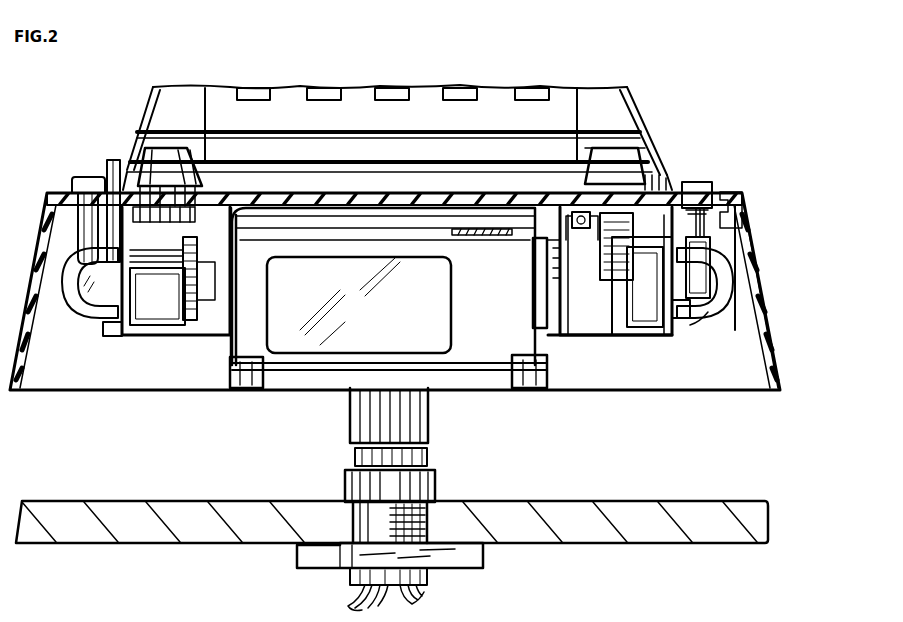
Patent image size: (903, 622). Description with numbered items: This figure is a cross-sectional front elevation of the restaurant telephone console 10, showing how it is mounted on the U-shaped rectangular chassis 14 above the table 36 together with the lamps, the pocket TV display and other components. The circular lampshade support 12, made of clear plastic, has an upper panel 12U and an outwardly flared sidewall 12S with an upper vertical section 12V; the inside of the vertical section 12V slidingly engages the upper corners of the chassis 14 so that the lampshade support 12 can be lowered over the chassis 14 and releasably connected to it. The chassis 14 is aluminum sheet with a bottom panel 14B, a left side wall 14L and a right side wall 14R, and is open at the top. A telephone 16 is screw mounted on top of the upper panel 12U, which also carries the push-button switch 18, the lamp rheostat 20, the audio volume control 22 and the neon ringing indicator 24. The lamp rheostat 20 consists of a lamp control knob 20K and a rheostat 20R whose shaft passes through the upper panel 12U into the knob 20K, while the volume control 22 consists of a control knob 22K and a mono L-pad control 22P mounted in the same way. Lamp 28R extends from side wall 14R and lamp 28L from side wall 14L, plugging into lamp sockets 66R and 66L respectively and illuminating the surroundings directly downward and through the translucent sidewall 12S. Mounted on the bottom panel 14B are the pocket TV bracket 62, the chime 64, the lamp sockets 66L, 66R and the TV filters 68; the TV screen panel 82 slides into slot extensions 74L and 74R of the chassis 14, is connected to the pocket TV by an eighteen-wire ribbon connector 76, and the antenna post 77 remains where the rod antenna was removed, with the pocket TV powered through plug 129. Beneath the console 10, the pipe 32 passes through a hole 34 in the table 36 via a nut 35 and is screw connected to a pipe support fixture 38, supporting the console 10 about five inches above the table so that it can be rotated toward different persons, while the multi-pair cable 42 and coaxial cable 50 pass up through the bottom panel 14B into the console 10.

The restaurant telephone console 10 is at (520, 66).
The circular lampshade support 12 is at (778, 392).
The outwardly flared sidewall 12S is at (772, 344).
The upper panel 12U is at (724, 192).
The upper vertical section 12V is at (768, 236).
The U-shaped rectangular chassis 14 is at (128, 336).
The left side wall 14L is at (116, 336).
The right side wall 14R is at (668, 314).
The bottom panel 14B is at (606, 335).
The telephone 16 is at (633, 100).
The push-button switch 18 is at (712, 263).
The lamp rheostat 20 is at (658, 150).
The lamp control knob 20K is at (626, 148).
The rheostat 20R is at (632, 182).
The audio volume control 22 is at (124, 166).
The control knob 22K is at (183, 160).
The mono L-pad control 22P is at (180, 222).
The neon ringing indicator 24 is at (88, 177).
The lamp 28L is at (94, 318).
The lamp 28R is at (732, 296).
The pipe 32 is at (430, 416).
The hole 34 is at (372, 522).
The nut 35 is at (438, 490).
The table 36 is at (556, 501).
The pipe support fixture 38 is at (470, 570).
The multi-pair cable 42 is at (362, 606).
The coaxial cable 50 is at (410, 604).
The pocket TV bracket 62 is at (212, 200).
The chime 64 is at (168, 300).
The lamp socket 66L is at (222, 248).
The lamp socket 66R is at (552, 271).
The TV filters 68 is at (653, 302).
The slot extension 74L is at (236, 378).
The slot extension 74R is at (548, 378).
The 18-wire ribbon connector 76 is at (500, 237).
The antenna post 77 is at (572, 215).
The TV screen panel 82 is at (497, 306).
The plug 129 is at (668, 190).